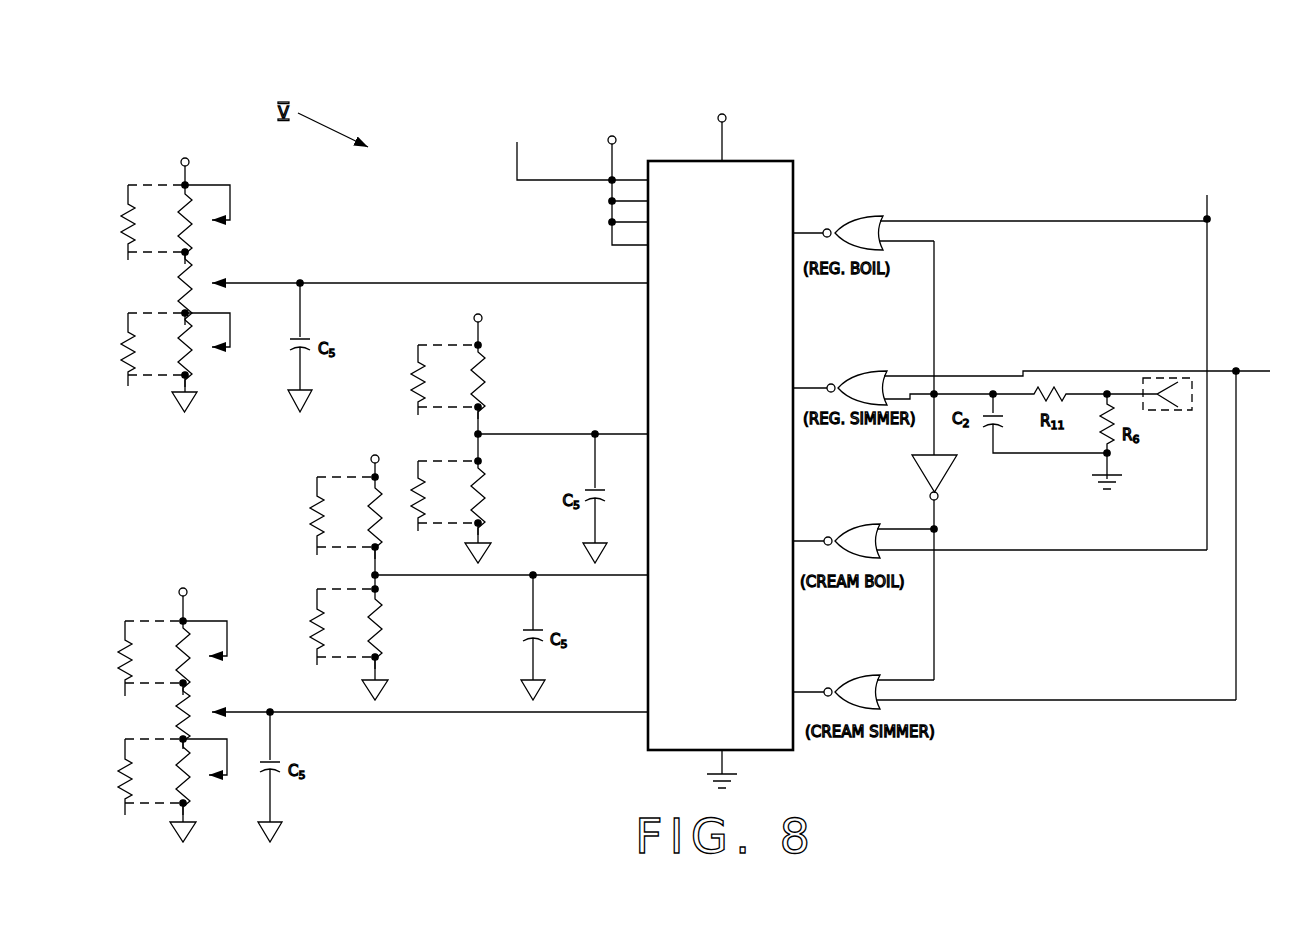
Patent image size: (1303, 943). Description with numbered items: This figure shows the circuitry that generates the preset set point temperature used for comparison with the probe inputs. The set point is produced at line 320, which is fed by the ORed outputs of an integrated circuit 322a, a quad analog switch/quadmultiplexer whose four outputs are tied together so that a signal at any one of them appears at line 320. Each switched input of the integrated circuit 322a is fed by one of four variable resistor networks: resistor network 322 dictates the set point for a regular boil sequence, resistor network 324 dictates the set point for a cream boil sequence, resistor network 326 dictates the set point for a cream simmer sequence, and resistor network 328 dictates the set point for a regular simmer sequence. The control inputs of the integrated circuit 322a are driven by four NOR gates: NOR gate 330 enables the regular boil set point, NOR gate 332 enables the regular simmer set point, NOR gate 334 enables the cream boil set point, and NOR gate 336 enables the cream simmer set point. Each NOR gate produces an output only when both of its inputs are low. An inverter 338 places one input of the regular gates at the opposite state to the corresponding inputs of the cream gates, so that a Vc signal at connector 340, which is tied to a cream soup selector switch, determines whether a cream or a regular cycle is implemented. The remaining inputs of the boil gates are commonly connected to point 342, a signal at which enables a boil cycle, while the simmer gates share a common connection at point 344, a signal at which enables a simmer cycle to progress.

The line 320 is at (580, 184).
The resistor network 322 is at (258, 224).
The integrated circuit 322a is at (720, 451).
The resistor network 324 is at (516, 378).
The resistor network 326 is at (298, 508).
The resistor network 328 is at (150, 612).
The NOR gate 330 is at (847, 218).
The NOR gate 332 is at (848, 372).
The NOR gate 334 is at (851, 524).
The NOR gate 336 is at (851, 677).
The inverter 338 is at (950, 473).
The connector 340 is at (1152, 378).
The point 342 is at (1212, 222).
The point 344 is at (1236, 368).